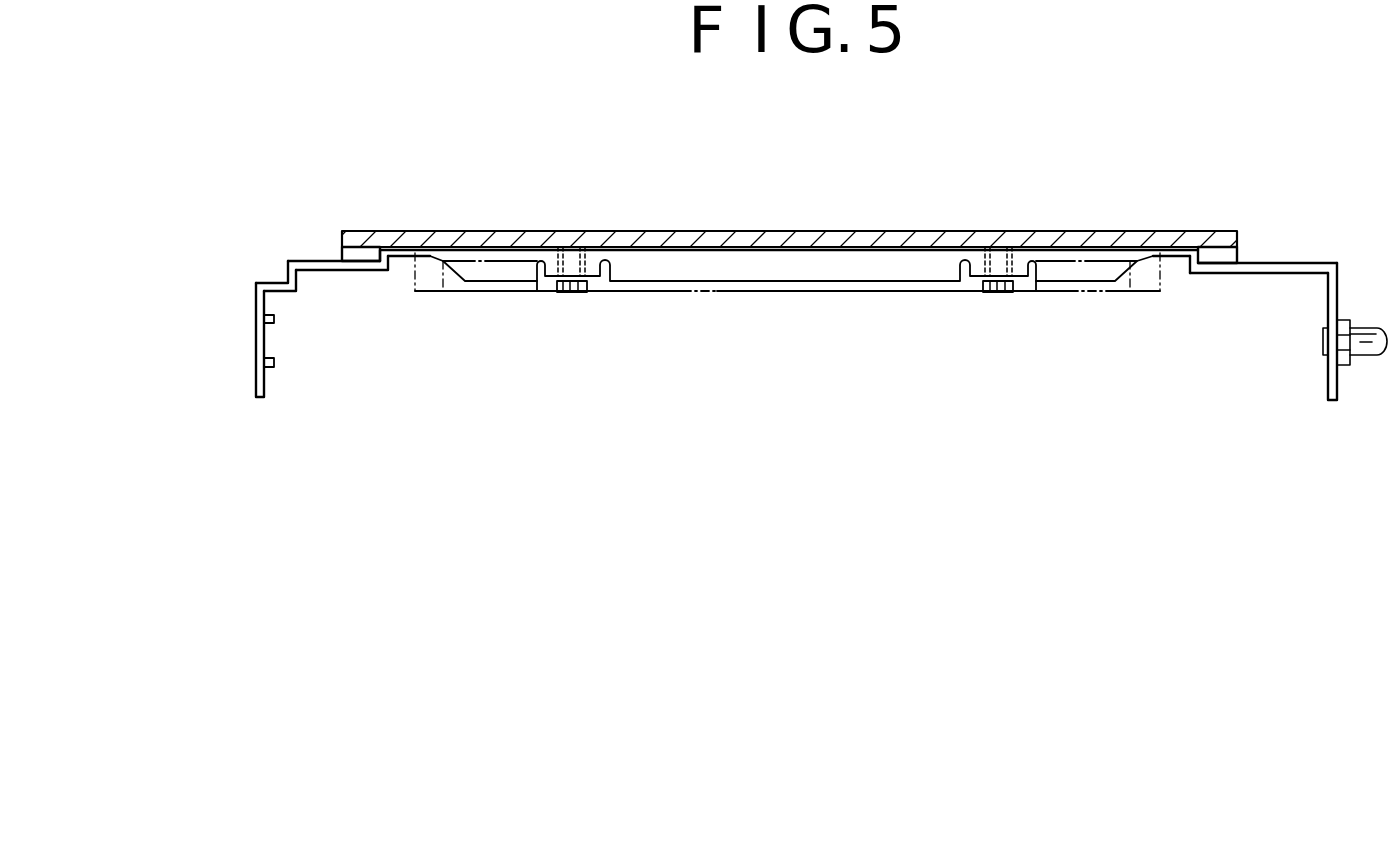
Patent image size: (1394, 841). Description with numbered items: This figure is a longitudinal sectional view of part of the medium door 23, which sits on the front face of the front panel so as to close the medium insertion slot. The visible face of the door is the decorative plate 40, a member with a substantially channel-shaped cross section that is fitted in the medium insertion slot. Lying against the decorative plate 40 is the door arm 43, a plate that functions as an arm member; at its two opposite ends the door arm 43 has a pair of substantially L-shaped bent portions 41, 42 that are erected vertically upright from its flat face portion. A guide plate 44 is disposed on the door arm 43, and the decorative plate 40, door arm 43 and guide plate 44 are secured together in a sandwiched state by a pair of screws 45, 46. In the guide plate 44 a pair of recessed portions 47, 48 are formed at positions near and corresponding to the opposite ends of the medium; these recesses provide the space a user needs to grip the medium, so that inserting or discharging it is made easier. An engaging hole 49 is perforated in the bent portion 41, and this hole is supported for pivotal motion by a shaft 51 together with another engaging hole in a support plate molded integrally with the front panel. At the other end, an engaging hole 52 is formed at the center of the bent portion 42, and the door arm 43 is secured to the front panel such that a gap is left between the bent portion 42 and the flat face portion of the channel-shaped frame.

The medium door 23 is at (912, 225).
The decorative plate 40 is at (1137, 233).
The bent portion 41 is at (1328, 320).
The bent portion 42 is at (264, 386).
The door arm 43 is at (1290, 262).
The guide plate 44 is at (763, 287).
The screw 45 is at (568, 293).
The screw 46 is at (998, 293).
The recessed portion 47 is at (497, 285).
The recessed portion 48 is at (1082, 293).
The engaging hole 49 is at (1322, 342).
The shaft 51 is at (1360, 322).
The engaging hole 52 is at (255, 331).